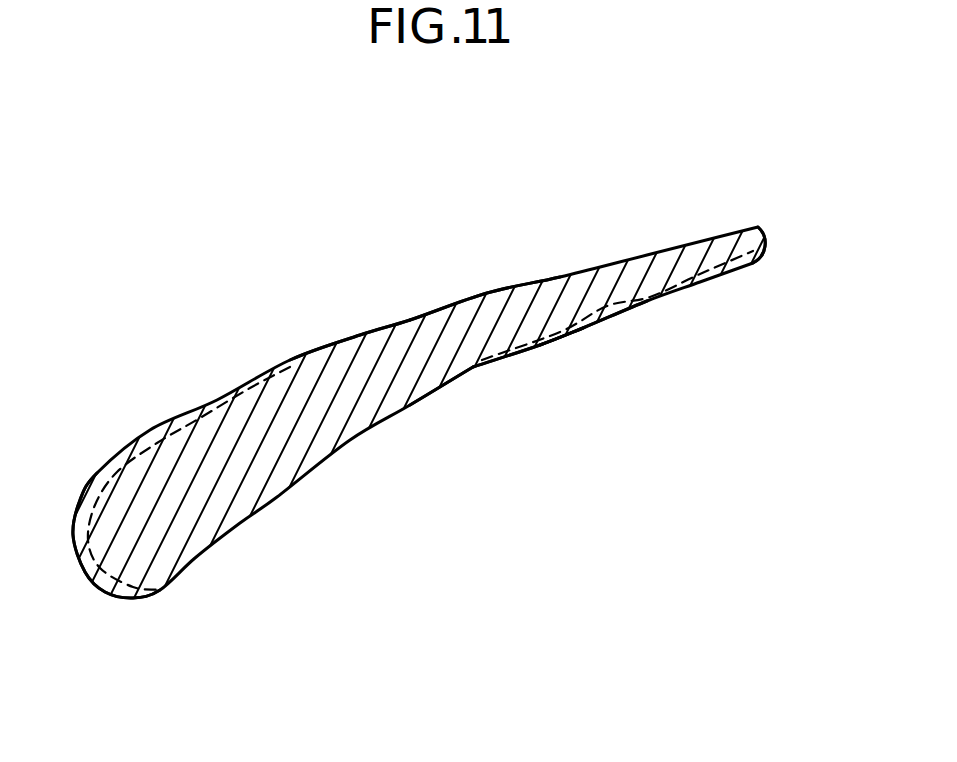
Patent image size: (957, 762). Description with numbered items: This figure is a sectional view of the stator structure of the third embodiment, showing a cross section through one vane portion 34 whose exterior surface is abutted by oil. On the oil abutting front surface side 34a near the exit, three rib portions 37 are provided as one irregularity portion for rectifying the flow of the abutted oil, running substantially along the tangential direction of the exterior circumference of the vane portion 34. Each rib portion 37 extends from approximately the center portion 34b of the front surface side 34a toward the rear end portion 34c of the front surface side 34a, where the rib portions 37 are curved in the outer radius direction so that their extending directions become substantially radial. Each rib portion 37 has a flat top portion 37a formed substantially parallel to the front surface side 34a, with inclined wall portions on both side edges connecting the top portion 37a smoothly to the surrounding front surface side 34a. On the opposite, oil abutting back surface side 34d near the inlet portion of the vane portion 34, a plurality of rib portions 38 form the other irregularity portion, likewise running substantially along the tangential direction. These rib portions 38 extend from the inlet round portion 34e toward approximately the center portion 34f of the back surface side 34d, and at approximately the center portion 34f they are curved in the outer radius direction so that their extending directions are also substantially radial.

The vane portion 34 is at (762, 222).
The front surface side 34a is at (528, 360).
The center portion of the front surface side 34b is at (472, 375).
The rear end portion of the front surface side 34c is at (763, 260).
The back surface side 34d is at (500, 285).
The inlet round portion 34e is at (103, 603).
The center portion of the back surface side 34f is at (355, 335).
The rib portion 37 is at (650, 300).
The flat top portion 37a is at (585, 330).
The rib portion 38 is at (97, 470).